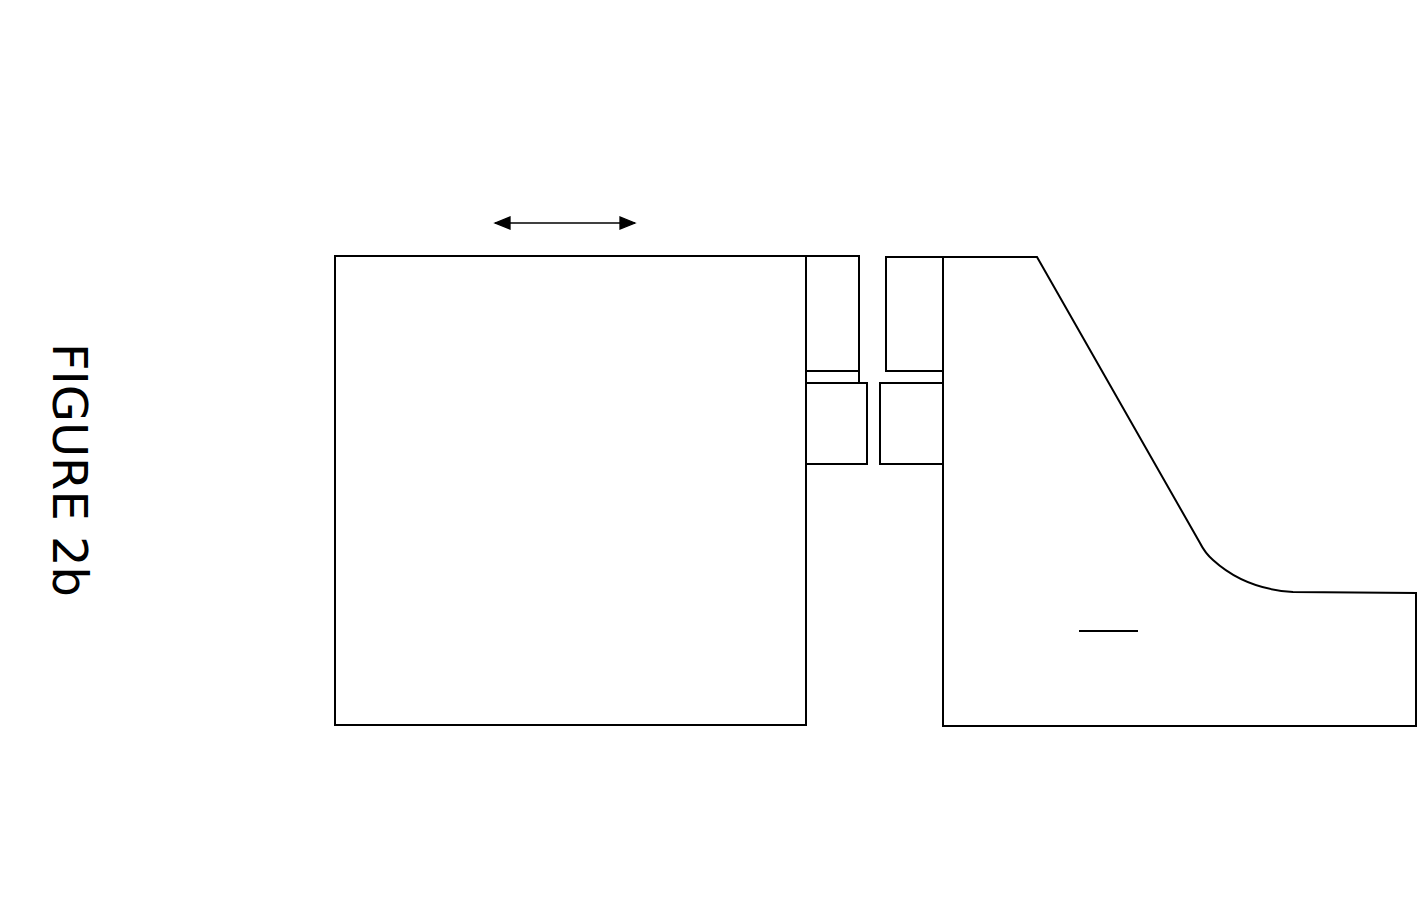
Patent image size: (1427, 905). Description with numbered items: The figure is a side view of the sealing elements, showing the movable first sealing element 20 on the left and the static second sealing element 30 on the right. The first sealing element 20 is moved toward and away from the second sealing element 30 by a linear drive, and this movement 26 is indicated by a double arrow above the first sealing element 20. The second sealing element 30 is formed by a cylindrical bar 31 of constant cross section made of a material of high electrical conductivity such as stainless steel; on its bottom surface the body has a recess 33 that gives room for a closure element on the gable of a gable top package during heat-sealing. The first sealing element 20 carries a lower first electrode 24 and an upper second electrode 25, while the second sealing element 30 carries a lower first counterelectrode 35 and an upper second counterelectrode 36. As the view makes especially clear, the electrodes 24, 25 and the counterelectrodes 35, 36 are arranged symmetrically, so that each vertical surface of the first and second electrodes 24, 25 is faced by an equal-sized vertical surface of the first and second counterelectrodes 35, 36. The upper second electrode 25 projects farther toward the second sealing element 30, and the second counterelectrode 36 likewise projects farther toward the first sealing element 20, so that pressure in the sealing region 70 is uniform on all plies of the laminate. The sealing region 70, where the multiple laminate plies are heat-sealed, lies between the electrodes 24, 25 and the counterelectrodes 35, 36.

The first sealing element 20 is at (575, 736).
The first electrode 24 is at (838, 298).
The second electrode 25 is at (848, 427).
The movement 26 is at (562, 222).
The second sealing element 30 is at (1107, 732).
The cylindrical bar 31 is at (1108, 648).
The recess 33 is at (1214, 554).
The first counterelectrode 35 is at (924, 305).
The second counterelectrode 36 is at (912, 435).
The sealing region 70 is at (874, 357).